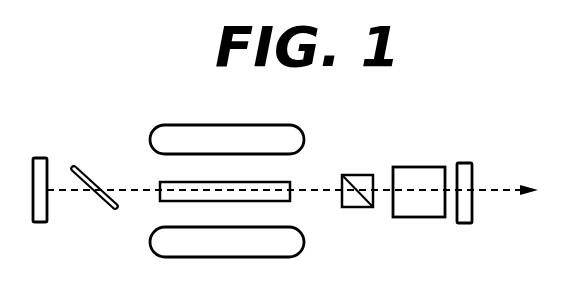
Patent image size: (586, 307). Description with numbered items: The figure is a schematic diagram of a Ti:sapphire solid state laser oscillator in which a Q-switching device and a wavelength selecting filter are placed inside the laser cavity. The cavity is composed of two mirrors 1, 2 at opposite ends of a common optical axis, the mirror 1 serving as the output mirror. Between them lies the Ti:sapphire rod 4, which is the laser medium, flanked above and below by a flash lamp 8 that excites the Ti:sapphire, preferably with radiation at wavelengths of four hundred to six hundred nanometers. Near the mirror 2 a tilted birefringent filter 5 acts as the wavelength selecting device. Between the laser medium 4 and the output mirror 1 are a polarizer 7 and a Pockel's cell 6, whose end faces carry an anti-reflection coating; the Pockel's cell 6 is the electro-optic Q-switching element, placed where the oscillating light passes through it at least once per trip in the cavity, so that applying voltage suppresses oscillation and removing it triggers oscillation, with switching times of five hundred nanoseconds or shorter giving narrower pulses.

The mirror 1 is at (463, 163).
The mirror 2 is at (40, 157).
The Ti:sapphire rod 4 is at (288, 181).
The birefringent filter 5 is at (83, 166).
The Pockel's cell 6 is at (427, 167).
The polarizer 7 is at (362, 175).
The flash lamp 8 is at (294, 126).